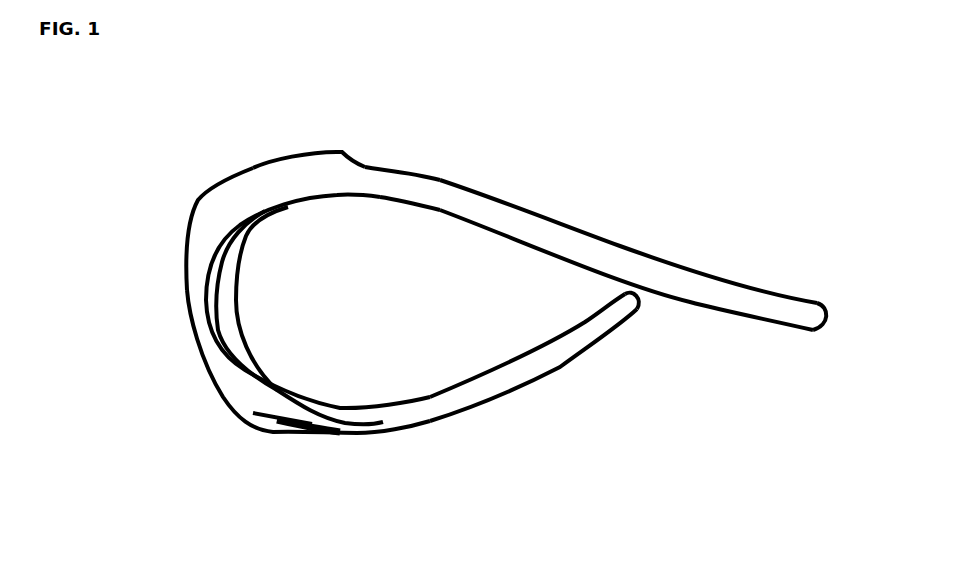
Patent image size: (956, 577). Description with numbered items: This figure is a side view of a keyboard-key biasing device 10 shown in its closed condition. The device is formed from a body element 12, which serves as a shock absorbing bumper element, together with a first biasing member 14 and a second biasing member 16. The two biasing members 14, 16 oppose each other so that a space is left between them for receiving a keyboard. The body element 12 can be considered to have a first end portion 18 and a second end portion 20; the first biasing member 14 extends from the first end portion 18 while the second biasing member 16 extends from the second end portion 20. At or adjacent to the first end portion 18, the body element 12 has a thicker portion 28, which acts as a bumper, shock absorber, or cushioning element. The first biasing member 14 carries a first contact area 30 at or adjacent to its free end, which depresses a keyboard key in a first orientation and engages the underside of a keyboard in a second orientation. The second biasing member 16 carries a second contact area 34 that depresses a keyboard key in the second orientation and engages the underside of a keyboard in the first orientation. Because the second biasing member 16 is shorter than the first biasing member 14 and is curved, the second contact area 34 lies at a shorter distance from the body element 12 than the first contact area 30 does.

The keyboard-key biasing device 10 is at (690, 157).
The body element 12 is at (172, 303).
The first biasing member 14 is at (640, 288).
The second biasing member 16 is at (562, 393).
The first end portion 18 is at (401, 158).
The second end portion 20 is at (358, 448).
The thicker portion 28 is at (289, 152).
The first contact area 30 is at (816, 345).
The second contact area 34 is at (632, 317).